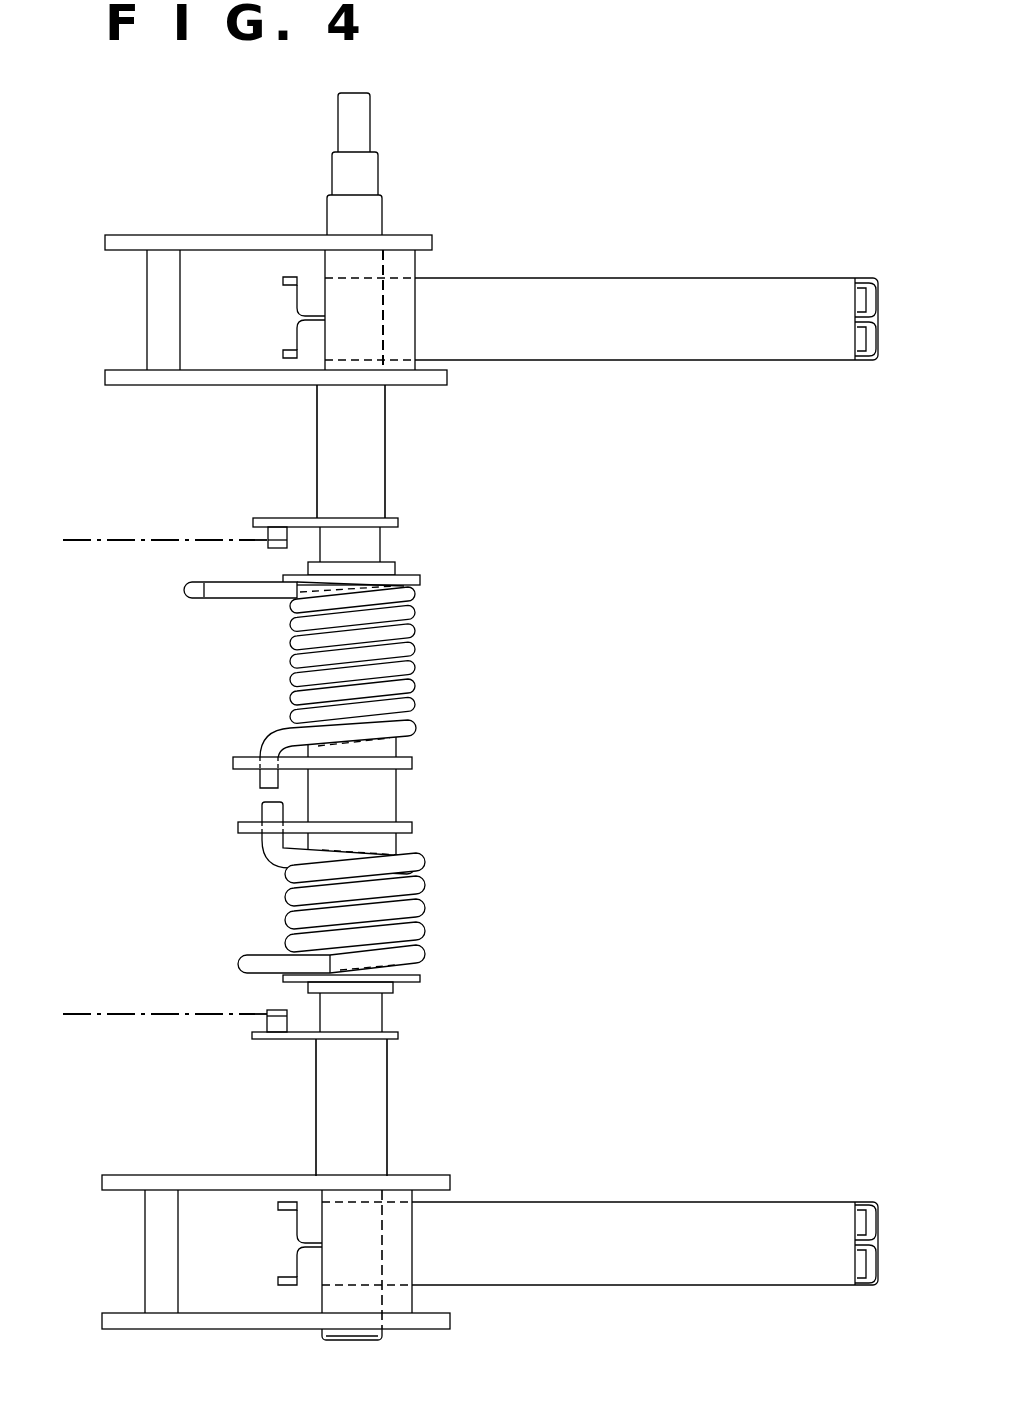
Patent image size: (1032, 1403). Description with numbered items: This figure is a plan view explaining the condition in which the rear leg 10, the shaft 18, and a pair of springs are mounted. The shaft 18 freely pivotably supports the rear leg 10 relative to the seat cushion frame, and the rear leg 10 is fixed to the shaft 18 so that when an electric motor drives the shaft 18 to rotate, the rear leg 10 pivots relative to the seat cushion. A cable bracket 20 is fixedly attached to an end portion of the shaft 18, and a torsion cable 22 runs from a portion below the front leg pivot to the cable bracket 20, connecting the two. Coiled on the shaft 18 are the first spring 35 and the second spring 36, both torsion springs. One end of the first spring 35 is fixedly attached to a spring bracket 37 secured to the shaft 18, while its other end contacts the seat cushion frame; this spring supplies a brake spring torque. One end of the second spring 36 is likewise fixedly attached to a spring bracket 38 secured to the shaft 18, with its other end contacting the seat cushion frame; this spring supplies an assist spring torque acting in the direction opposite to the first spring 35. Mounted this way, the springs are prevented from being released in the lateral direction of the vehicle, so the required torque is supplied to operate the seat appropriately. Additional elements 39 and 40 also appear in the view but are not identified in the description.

The rear leg 10 is at (604, 278).
The shaft 18 is at (388, 1102).
The cable bracket 20 is at (258, 518).
The torsion cable 22 is at (138, 537).
The first spring 35 is at (418, 668).
The second spring 36 is at (426, 900).
The spring bracket 37 is at (233, 762).
The spring bracket 38 is at (238, 828).
The spring seat plate 39 is at (420, 580).
The spring seat plate 40 is at (420, 970).